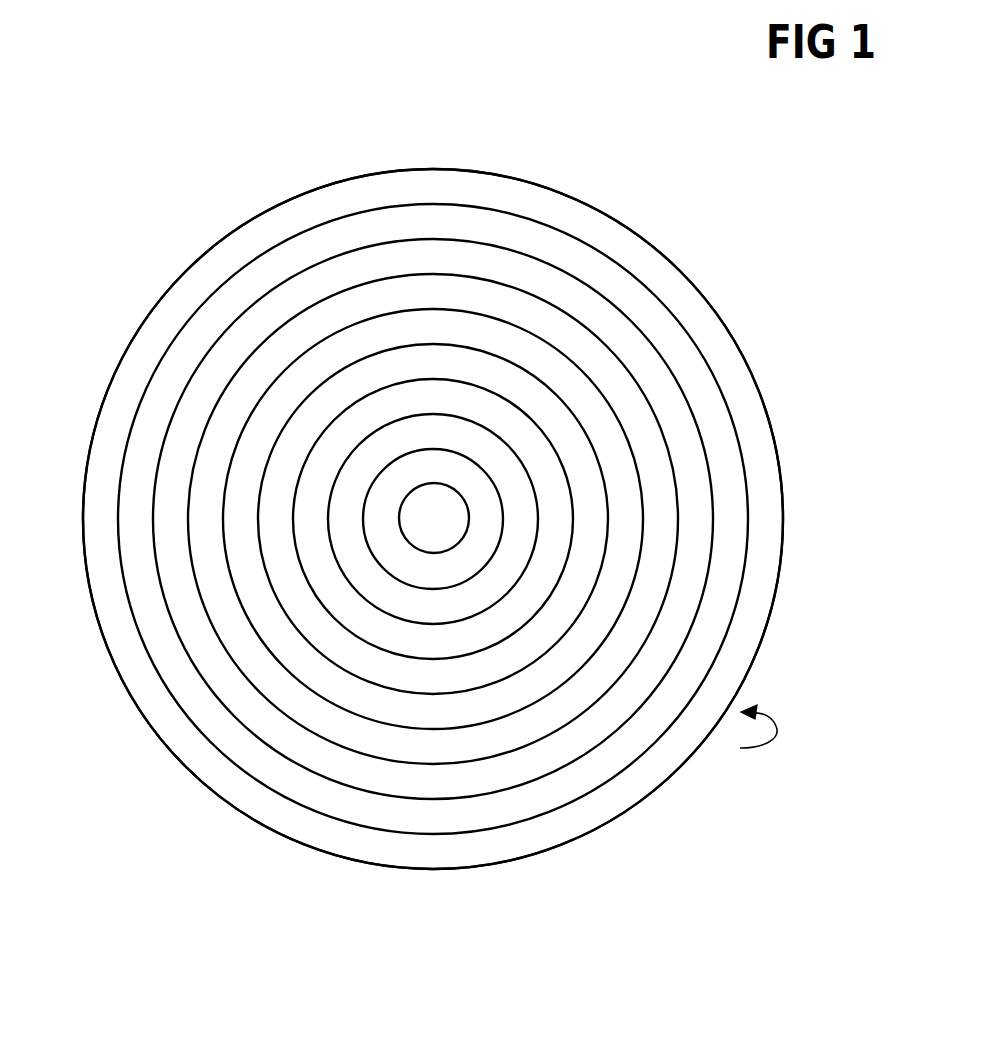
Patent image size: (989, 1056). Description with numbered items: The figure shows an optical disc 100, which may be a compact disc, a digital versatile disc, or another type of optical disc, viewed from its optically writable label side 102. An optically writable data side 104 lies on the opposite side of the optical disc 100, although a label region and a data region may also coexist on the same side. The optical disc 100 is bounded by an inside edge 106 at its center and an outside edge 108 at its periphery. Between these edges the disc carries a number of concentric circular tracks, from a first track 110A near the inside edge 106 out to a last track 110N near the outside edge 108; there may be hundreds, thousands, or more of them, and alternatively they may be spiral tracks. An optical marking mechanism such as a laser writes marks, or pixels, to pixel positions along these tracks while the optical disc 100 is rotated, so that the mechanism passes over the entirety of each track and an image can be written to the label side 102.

The optical disc 100 is at (78, 236).
The optically writable label side 102 is at (318, 200).
The optically writable data side 104 is at (749, 742).
The inside edge 106 is at (461, 502).
The outside edge 108 is at (784, 532).
The concentric circular track 110A is at (462, 414).
The concentric circular track 110N is at (462, 238).